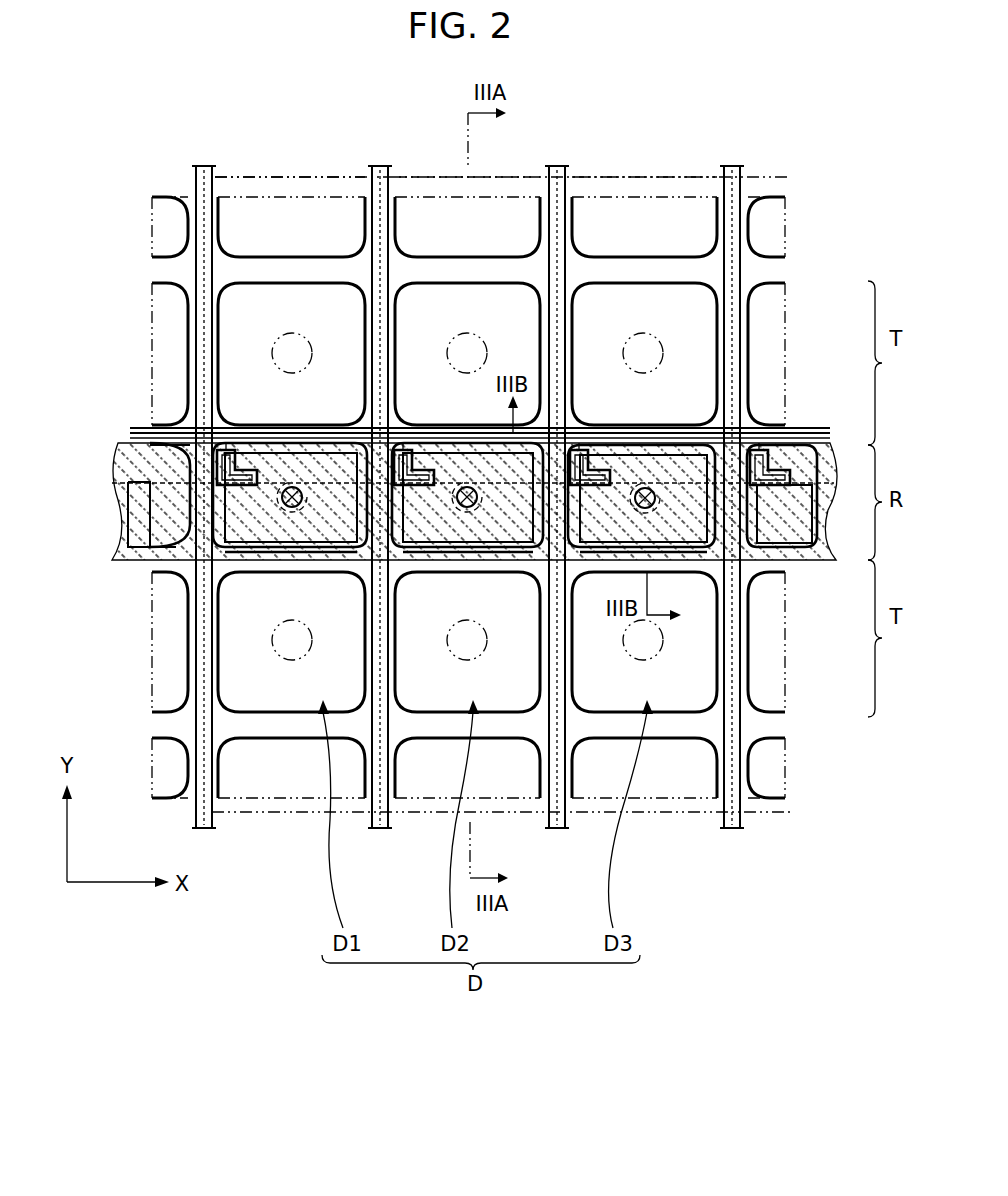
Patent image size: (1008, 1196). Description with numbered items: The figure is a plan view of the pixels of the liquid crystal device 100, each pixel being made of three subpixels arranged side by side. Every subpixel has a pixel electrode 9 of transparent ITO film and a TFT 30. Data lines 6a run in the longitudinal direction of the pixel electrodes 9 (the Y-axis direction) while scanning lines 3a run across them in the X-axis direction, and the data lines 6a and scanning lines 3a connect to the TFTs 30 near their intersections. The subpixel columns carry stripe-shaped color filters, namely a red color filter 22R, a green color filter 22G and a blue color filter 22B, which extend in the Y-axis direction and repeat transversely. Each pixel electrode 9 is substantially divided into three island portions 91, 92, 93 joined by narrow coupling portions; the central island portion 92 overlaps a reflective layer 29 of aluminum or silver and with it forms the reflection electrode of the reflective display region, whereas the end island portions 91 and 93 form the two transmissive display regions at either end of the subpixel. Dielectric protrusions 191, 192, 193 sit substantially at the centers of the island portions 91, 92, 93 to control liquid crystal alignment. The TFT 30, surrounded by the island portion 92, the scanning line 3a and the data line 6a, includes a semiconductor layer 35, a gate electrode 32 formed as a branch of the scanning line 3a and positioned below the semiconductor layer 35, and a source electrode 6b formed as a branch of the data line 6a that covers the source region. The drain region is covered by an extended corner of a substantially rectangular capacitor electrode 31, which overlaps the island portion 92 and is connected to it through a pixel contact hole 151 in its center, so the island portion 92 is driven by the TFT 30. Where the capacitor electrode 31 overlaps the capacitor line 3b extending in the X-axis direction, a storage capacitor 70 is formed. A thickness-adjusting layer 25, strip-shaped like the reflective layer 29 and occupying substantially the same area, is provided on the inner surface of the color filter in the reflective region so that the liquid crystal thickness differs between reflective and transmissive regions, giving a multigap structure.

The liquid crystal device 100 is at (818, 190).
The pixel electrode 9 is at (493, 497).
The island portion 91 is at (705, 392).
The island portion 93 is at (715, 682).
The island portion 92 is at (460, 495).
The dielectric protrusion 191 is at (663, 352).
The dielectric protrusion 192 is at (655, 508).
The dielectric protrusion 193 is at (663, 643).
The data line 6a is at (200, 175).
The source electrode 6b is at (360, 430).
The red color filter 22R is at (258, 176).
The green color filter 22G is at (417, 176).
The blue color filter 22B is at (620, 176).
The scanning line 3a is at (143, 430).
The capacitor line 3b is at (150, 477).
The TFT 30 is at (800, 455).
The capacitor electrode 31 is at (220, 500).
The gate electrode 32 is at (440, 440).
The semiconductor layer 35 is at (410, 428).
The pixel contact hole 151 is at (283, 500).
The storage capacitor 70 is at (420, 555).
The reflective layer 29 is at (675, 553).
The thickness-adjusting layer 25 is at (806, 560).